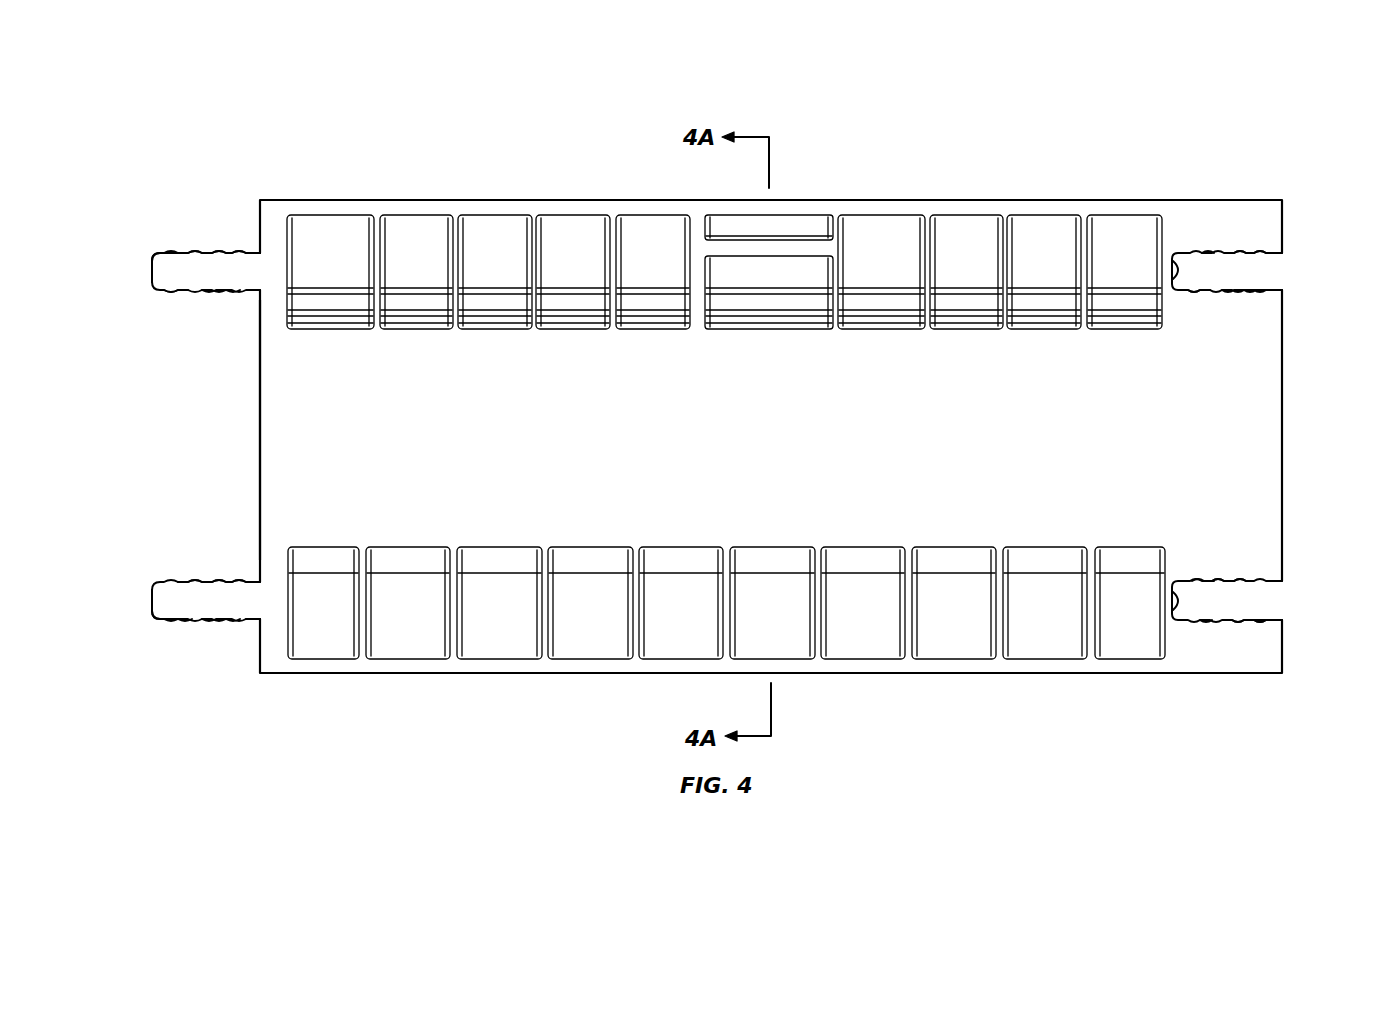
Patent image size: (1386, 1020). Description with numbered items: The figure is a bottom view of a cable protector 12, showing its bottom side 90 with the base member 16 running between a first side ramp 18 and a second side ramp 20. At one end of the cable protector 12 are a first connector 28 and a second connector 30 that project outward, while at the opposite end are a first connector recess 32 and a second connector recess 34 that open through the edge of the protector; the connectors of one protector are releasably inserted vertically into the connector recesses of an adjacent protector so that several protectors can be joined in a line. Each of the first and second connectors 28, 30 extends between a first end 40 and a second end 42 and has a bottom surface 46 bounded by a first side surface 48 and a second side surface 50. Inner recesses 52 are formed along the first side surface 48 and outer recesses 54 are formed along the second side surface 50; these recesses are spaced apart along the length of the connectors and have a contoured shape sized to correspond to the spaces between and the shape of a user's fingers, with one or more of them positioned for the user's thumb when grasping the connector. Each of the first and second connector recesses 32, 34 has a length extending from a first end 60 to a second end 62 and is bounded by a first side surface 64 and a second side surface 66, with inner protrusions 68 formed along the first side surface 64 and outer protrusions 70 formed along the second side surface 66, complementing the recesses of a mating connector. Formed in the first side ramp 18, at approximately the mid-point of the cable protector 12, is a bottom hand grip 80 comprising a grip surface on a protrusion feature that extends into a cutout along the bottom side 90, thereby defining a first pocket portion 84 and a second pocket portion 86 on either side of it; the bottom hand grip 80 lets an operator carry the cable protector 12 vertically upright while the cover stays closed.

The first cable protector 12 is at (1010, 165).
The base member 16 is at (256, 384).
The first side ramp 18 is at (443, 674).
The second side ramp 20 is at (547, 199).
The first connector 28 is at (176, 631).
The second connector 30 is at (176, 243).
The first connector recess 32 is at (1281, 596).
The second connector recess 34 is at (1280, 262).
The first end 40 is at (248, 252).
The second end 42 is at (151, 272).
The bottom surface 46 is at (165, 256).
The first side surface 48 is at (200, 292).
The second side surface 50 is at (208, 252).
The inner recesses 52 is at (246, 292).
The outer recesses 54 is at (244, 252).
The first end 60 is at (1282, 291).
The second end 62 is at (1176, 256).
The first side surface 64 is at (1196, 292).
The second side surface 66 is at (1208, 252).
The inner protrusions 68 is at (1248, 292).
The outer protrusions 70 is at (1260, 252).
The bottom hand grip 80 is at (810, 225).
The first pocket portion 84 is at (782, 226).
The second pocket portion 86 is at (806, 268).
The bottom side 90 is at (804, 449).